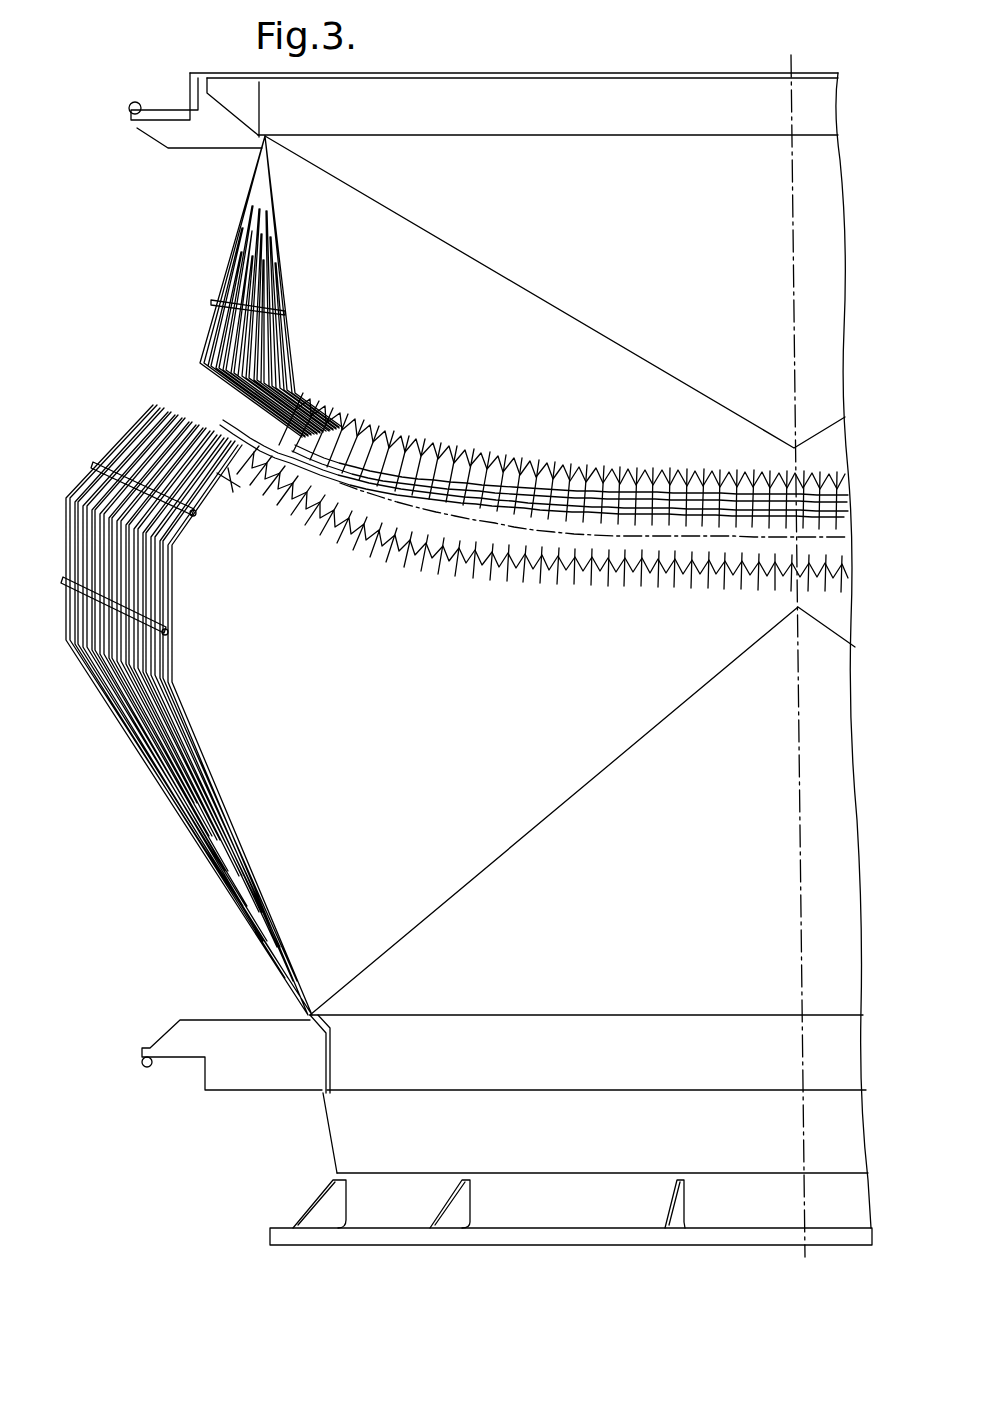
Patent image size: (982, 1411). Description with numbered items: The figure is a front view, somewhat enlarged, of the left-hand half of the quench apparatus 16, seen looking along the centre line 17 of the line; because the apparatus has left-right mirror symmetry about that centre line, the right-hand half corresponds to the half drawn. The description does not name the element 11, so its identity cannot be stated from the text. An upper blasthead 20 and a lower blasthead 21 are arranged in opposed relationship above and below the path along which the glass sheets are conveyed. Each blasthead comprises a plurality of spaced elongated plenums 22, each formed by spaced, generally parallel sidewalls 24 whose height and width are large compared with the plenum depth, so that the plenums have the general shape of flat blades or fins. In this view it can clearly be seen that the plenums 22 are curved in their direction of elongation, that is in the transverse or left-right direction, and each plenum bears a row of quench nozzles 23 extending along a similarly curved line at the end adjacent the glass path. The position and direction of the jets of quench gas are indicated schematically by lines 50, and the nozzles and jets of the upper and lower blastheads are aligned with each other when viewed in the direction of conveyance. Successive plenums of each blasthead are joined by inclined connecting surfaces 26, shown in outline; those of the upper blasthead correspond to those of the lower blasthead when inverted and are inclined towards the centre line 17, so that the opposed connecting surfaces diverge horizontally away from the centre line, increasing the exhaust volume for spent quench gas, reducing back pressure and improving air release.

The tube bank 11 is at (246, 440).
The quench apparatus 16 is at (148, 322).
The centre line 17 is at (790, 249).
The upper blasthead 20 is at (240, 215).
The lower blasthead 21 is at (106, 432).
The plenum 22 is at (289, 370).
The quench nozzle 23 is at (388, 445).
The sidewall 24 is at (436, 307).
The connecting surface 26 is at (622, 349).
The jet line 50 is at (487, 465).